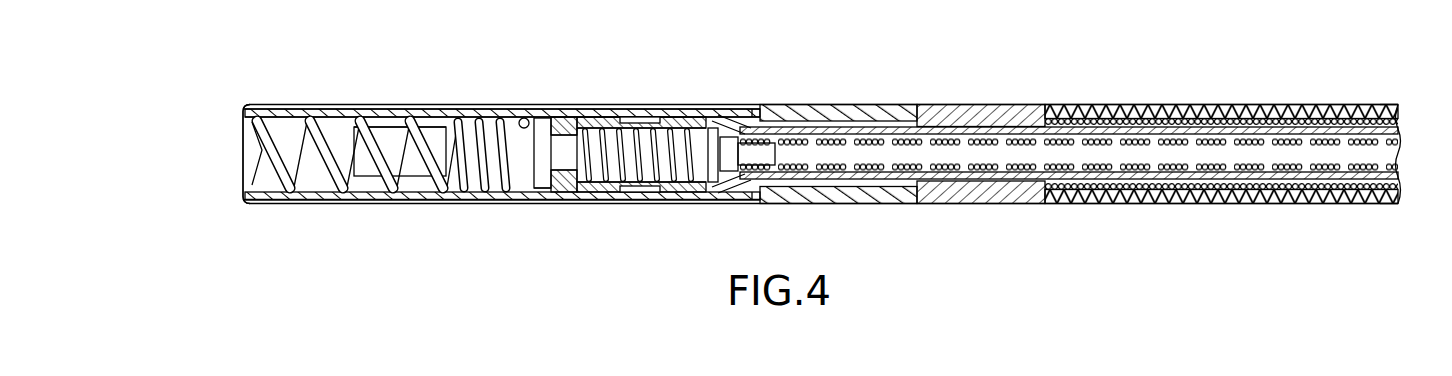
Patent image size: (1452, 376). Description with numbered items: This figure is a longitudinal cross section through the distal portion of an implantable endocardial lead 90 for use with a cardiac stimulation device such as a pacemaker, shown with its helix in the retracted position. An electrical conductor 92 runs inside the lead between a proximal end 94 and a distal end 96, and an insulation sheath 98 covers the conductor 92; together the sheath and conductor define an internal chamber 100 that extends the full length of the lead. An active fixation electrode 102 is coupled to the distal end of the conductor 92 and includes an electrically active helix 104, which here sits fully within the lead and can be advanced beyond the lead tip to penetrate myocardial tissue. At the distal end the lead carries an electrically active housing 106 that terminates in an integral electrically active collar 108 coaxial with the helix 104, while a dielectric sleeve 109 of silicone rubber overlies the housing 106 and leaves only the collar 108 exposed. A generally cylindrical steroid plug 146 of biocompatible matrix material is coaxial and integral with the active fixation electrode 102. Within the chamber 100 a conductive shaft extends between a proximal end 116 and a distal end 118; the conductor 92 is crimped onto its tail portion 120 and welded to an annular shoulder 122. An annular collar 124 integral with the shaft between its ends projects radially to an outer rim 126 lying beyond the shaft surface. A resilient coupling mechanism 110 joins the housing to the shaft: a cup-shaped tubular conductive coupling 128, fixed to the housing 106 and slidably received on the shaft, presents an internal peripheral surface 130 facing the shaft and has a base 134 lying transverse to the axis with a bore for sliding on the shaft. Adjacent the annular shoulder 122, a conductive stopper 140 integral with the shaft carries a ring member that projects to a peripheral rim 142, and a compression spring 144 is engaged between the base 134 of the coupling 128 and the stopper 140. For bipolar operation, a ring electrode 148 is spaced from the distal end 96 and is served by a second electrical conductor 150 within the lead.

The implantable endocardial lead 90 is at (968, 72).
The electrical conductor 92 is at (1397, 152).
The proximal end 94 is at (1406, 110).
The distal end 96 is at (235, 125).
The insulation sheath 98 is at (1268, 116).
The internal chamber 100 is at (1196, 175).
The active fixation electrode 102 is at (327, 116).
The electrically active helix 104 is at (268, 163).
The electrically active housing 106 is at (443, 118).
The electrically active collar 108 is at (248, 106).
The sleeve 109 is at (272, 201).
The resilient coupling mechanism 110 is at (746, 224).
The proximal end 116 is at (812, 136).
The distal end 118 is at (452, 177).
The tail portion 120 is at (760, 142).
The annular shoulder 122 is at (728, 120).
The annular collar 124 is at (543, 128).
The outer rim 126 is at (540, 192).
The tubular conductive coupling 128 is at (590, 113).
The internal peripheral surface 130 is at (627, 128).
The base 134 is at (612, 184).
The conductive stopper 140 is at (720, 185).
The peripheral rim 142 is at (713, 128).
The compression spring 144 is at (640, 186).
The steroid plug 146 is at (392, 134).
The ring electrode 148 is at (932, 112).
The second electrical conductor 150 is at (1190, 117).